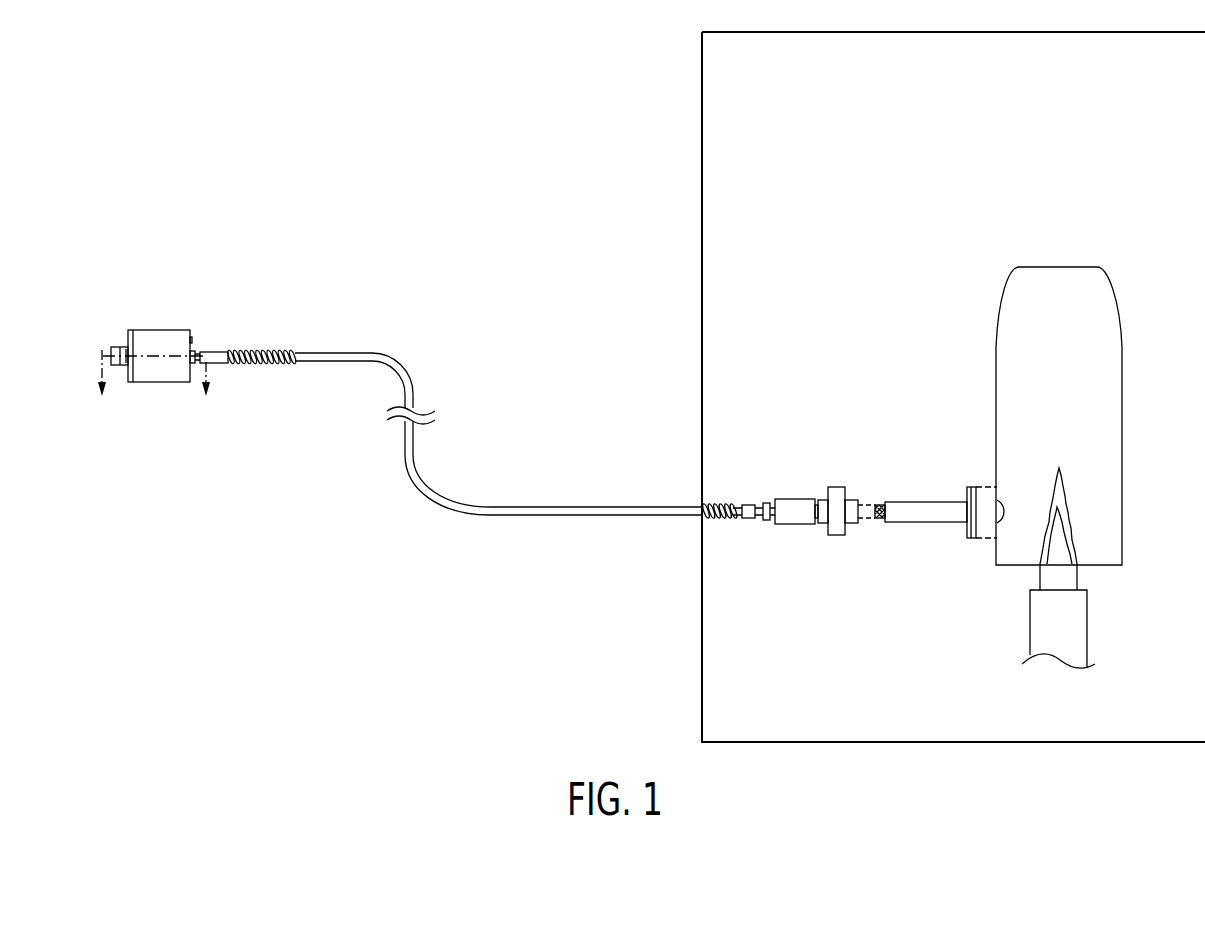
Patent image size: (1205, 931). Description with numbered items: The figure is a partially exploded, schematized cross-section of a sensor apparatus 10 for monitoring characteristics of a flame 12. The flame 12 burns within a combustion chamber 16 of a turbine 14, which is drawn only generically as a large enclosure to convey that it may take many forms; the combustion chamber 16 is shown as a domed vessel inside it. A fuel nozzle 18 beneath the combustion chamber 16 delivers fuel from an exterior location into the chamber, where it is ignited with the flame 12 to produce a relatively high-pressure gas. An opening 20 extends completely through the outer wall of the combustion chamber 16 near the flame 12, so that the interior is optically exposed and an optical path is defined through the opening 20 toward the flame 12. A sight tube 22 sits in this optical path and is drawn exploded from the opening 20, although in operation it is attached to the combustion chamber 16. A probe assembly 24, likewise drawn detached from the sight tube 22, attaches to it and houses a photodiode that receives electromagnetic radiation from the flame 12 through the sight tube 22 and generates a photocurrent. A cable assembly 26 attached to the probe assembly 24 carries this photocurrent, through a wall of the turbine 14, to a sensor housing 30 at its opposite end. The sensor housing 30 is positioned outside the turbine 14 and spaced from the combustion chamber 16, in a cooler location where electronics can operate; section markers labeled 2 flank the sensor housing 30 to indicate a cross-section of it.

The sensor apparatus 10 is at (272, 595).
The flame 12 is at (1074, 520).
The turbine 14 is at (702, 624).
The combustion chamber 16 is at (996, 402).
The fuel nozzle 18 is at (1088, 632).
The opening 20 is at (1003, 509).
The sight tube 22 is at (918, 522).
The probe assembly 24 is at (801, 525).
The cable assembly 26 is at (418, 474).
The sensor housing 30 is at (148, 330).
The section line for FIG. 2 is at (154, 393).